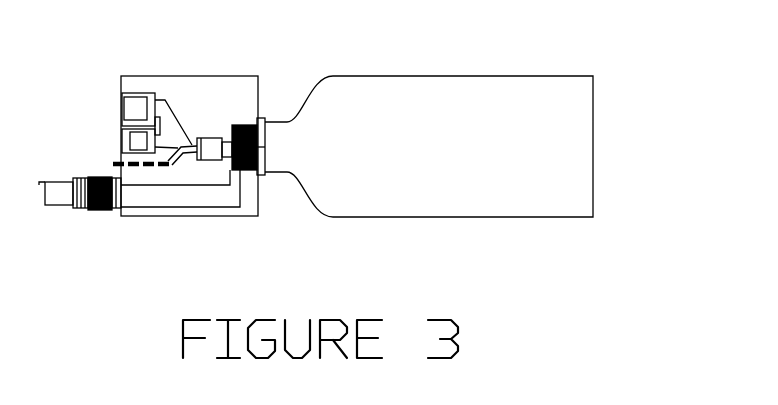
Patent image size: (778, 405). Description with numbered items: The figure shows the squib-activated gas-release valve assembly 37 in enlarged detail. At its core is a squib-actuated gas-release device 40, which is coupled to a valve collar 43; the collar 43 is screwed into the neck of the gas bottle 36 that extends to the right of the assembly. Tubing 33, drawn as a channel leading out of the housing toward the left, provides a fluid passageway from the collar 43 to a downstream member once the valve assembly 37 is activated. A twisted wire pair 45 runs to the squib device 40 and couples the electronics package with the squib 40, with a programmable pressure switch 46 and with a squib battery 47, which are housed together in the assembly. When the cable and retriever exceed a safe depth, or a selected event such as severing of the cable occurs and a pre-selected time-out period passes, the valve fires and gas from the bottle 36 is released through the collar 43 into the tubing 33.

The tubing 33 is at (145, 193).
The gas bottle 36 is at (389, 156).
The valve assembly 37 is at (215, 111).
The squib-actuated gas-release device 40 is at (212, 162).
The valve collar 43 is at (247, 122).
The twisted wire pair 45 is at (116, 165).
The programmable pressure switch 46 is at (137, 142).
The squib battery 47 is at (133, 110).